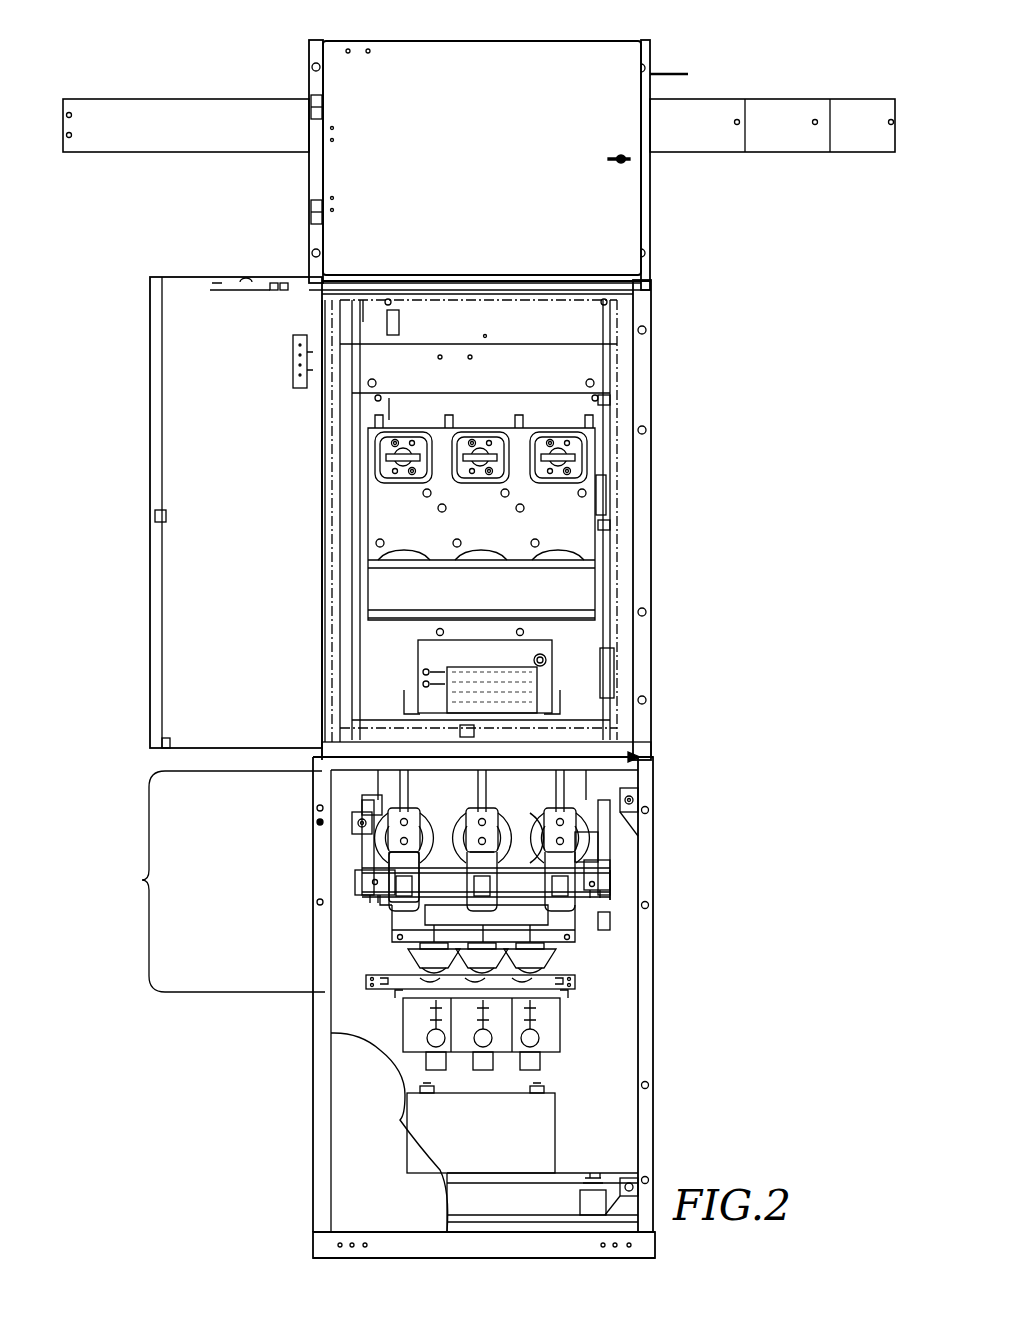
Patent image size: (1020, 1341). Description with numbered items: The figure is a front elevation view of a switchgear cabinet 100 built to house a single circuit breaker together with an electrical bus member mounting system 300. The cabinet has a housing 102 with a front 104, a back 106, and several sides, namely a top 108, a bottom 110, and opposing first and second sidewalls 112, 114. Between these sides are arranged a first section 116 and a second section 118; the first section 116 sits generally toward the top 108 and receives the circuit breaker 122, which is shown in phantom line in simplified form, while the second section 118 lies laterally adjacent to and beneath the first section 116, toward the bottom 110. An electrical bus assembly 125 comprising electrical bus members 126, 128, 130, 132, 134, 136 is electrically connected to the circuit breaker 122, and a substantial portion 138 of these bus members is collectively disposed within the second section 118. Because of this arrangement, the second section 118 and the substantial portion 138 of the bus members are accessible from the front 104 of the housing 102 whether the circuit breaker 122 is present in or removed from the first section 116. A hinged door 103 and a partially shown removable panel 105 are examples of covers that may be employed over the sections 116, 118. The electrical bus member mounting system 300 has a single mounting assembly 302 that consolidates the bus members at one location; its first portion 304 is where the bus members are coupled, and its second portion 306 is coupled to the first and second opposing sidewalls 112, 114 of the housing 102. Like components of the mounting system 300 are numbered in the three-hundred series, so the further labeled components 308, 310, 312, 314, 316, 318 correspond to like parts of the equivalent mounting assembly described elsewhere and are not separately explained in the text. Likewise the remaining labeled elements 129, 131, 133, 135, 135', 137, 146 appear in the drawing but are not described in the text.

The switchgear cabinet 100 is at (215, 1193).
The housing 102 is at (540, 1256).
The hinged door 103 is at (168, 322).
The front 104 is at (337, 52).
The removable panel 105 is at (332, 1086).
The back 106 is at (655, 757).
The top 108 is at (452, 40).
The bottom 110 is at (370, 1258).
The first sidewall 112 is at (310, 191).
The second sidewall 114 is at (652, 450).
The first section 116 is at (612, 444).
The second section 118 is at (655, 965).
The circuit breaker 122 is at (340, 395).
The electrical bus assembly 125 is at (360, 800).
The electrical bus member 126 is at (600, 852).
The electrical bus member 128 is at (560, 430).
The mounting bracket 129 is at (352, 858).
The electrical bus member 130 is at (129, 98).
The fastener 131 is at (372, 830).
The electrical bus member 132 is at (612, 1178).
The conductor 133 is at (512, 820).
The electrical bus member 134 is at (612, 900).
The terminal 135 is at (482, 724).
The terminal 135' is at (373, 906).
The electrical bus member 136 is at (386, 890).
The insulator 137 is at (432, 970).
The substantial portion of the electrical bus members 138 is at (136, 893).
The shelf 146 is at (596, 750).
The electrical bus member mounting system 300 is at (625, 1050).
The mounting assembly 302 is at (596, 980).
The first portion 304 is at (612, 927).
The second portion 306 is at (600, 842).
The base member 308 is at (443, 892).
The support member 310 is at (520, 915).
The arm 312 is at (598, 872).
The connector 314 is at (540, 872).
The conductor 316 is at (590, 808).
The conductor 318 is at (383, 808).